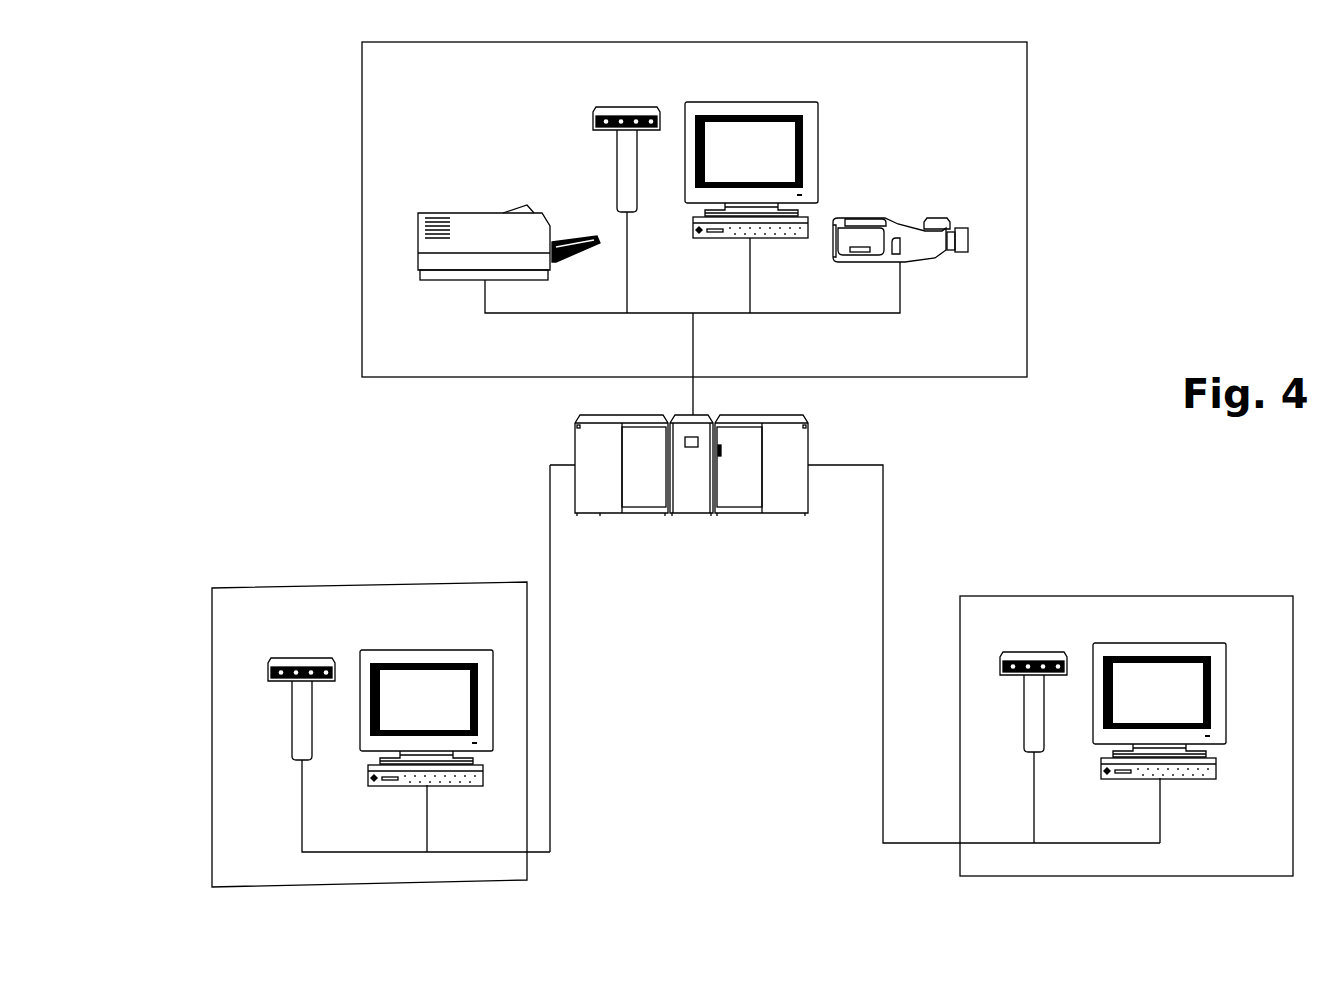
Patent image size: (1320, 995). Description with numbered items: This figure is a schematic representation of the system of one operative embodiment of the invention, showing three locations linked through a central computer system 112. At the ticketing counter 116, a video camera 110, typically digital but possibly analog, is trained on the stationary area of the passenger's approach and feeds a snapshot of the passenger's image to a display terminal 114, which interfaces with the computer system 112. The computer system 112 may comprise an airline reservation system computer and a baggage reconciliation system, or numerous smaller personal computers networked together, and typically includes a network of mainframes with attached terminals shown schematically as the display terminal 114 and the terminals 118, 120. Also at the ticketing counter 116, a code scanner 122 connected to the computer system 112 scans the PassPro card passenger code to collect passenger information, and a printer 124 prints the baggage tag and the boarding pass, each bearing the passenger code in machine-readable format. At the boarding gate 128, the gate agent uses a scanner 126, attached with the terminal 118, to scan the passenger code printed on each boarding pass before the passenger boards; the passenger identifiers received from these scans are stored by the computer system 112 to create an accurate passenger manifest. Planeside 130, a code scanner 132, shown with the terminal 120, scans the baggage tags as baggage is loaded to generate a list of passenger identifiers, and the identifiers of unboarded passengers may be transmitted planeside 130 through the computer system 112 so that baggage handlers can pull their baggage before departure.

The video camera 110 is at (927, 263).
The computer system 112 is at (573, 432).
The display terminal 114 is at (820, 142).
The ticketing counter 116 is at (362, 181).
The terminal 118 is at (412, 650).
The terminal 120 is at (1147, 643).
The code scanner 122 is at (607, 107).
The printer 124 is at (443, 213).
The scanner 126 is at (316, 658).
The boarding gate 128 is at (246, 583).
The planeside 130 is at (1228, 594).
The code scanner 132 is at (1040, 652).